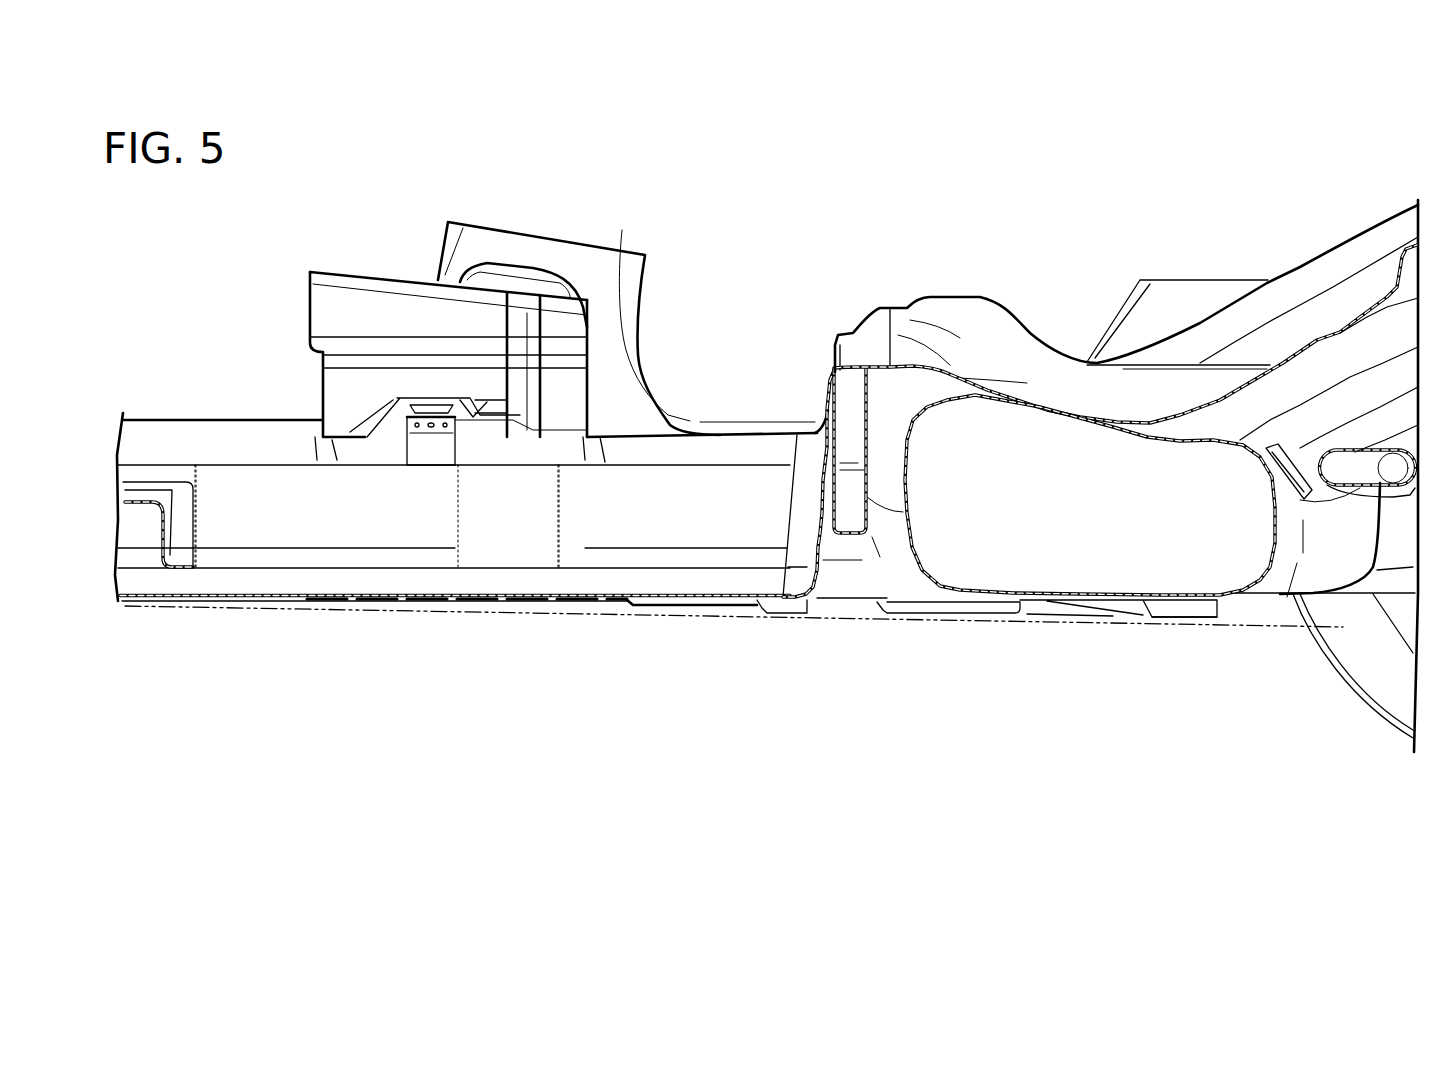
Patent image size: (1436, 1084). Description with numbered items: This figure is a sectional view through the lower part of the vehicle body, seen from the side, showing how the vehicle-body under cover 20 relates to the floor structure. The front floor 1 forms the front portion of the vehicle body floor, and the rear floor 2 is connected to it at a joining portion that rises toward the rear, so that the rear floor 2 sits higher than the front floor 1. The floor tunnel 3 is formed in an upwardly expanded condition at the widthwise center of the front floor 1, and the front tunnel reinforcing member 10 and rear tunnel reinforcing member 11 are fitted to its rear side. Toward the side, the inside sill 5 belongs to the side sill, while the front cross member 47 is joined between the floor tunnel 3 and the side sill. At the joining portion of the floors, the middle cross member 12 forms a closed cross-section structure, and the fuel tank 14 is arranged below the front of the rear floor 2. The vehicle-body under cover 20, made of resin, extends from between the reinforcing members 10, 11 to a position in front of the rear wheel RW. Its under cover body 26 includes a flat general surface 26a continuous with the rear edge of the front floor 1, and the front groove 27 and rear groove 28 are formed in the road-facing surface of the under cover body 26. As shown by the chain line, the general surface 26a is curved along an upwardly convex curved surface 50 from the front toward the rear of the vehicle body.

The front floor 1 is at (245, 603).
The rear floor 2 is at (960, 377).
The floor tunnel 3 is at (263, 490).
The inside sill 5 is at (1338, 243).
The front tunnel reinforcing member 10 is at (196, 478).
The rear tunnel reinforcing member 11 is at (558, 508).
The middle cross member 12 is at (838, 540).
The fuel tank 14 is at (1047, 595).
The vehicle-body under cover 20 is at (1153, 616).
The under cover body 26 is at (810, 608).
The general surface 26a is at (587, 606).
The front groove 27 is at (715, 607).
The rear groove 28 is at (955, 610).
The front cross member 47 is at (140, 497).
The upwardly convex curved surface 50 is at (297, 608).
The rear wheel RW is at (1355, 690).